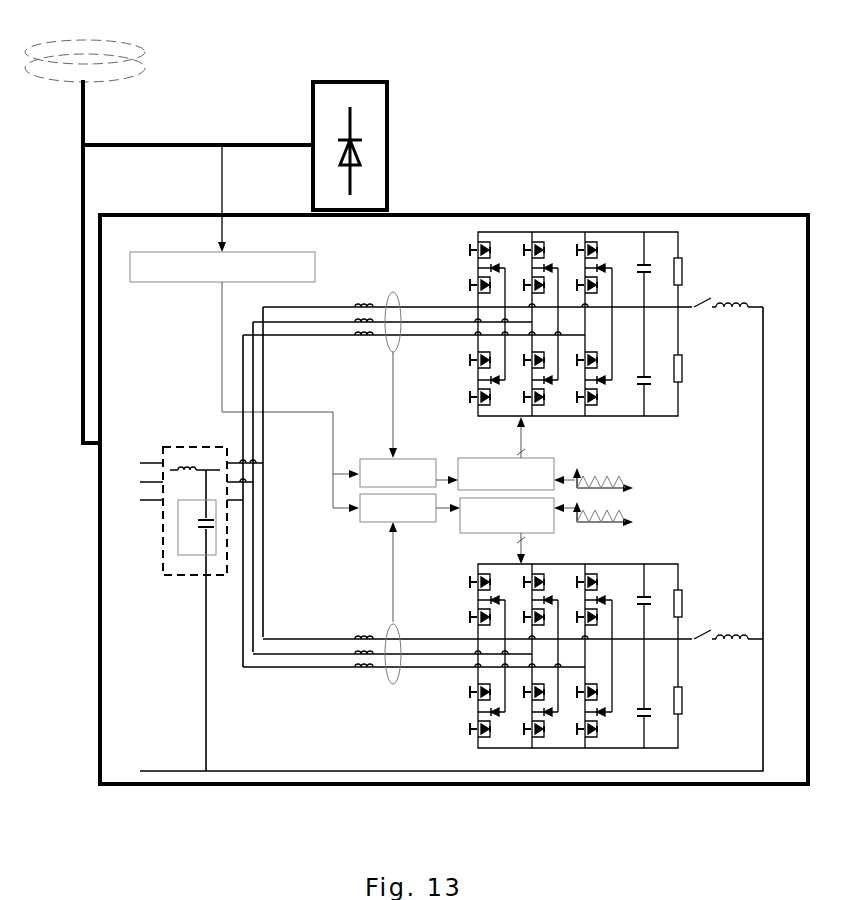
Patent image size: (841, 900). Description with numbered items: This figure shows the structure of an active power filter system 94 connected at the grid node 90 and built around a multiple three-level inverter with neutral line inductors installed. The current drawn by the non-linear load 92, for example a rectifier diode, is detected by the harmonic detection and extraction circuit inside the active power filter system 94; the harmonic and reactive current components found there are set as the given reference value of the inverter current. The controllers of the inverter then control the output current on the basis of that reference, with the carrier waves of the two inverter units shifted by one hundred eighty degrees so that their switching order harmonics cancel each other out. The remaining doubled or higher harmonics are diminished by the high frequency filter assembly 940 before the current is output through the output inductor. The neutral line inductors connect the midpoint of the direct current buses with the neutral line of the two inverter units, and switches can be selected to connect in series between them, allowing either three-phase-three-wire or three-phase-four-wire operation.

The grid node 90 is at (143, 73).
The non-linear load 92 is at (387, 107).
The active power filter system 94 is at (594, 214).
The filter assembly 940 is at (163, 548).